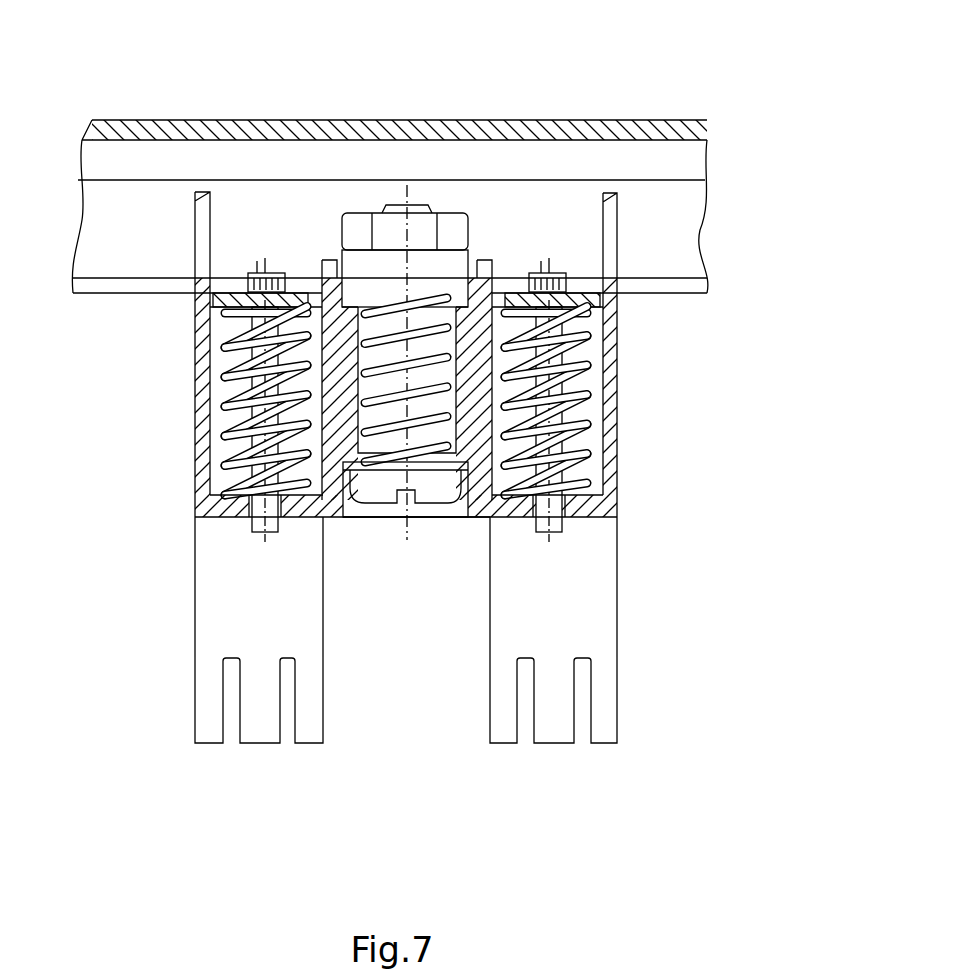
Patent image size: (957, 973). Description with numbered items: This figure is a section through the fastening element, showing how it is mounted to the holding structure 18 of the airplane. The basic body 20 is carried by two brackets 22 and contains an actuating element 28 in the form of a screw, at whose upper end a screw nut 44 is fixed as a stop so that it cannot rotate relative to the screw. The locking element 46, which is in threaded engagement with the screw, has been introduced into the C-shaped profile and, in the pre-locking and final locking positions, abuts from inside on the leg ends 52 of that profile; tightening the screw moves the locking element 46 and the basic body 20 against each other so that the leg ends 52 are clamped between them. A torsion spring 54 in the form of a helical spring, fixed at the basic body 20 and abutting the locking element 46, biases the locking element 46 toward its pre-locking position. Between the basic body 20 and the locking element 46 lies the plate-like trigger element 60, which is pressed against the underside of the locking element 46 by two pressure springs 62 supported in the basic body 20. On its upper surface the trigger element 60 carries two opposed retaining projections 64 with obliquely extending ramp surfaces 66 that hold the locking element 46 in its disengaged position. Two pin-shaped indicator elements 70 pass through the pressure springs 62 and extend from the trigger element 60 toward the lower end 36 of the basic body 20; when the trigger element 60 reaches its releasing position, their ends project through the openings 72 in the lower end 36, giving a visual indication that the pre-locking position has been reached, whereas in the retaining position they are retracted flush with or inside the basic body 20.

The holding structure 18 is at (630, 127).
The leg ends 52 is at (670, 287).
The screw nut 44 is at (428, 230).
The locking element 46 is at (372, 262).
The actuating element 28 is at (457, 280).
The torsion spring 54 is at (415, 450).
The lower end 36 is at (478, 527).
The basic body 20 is at (603, 505).
The brackets 22 is at (243, 603).
The trigger element 60 is at (592, 312).
The pressure springs 62 is at (243, 372).
The retaining projections 64 is at (280, 272).
The ramp surfaces 66 is at (251, 273).
The indicator elements 70 is at (262, 519).
The openings 72 is at (283, 520).